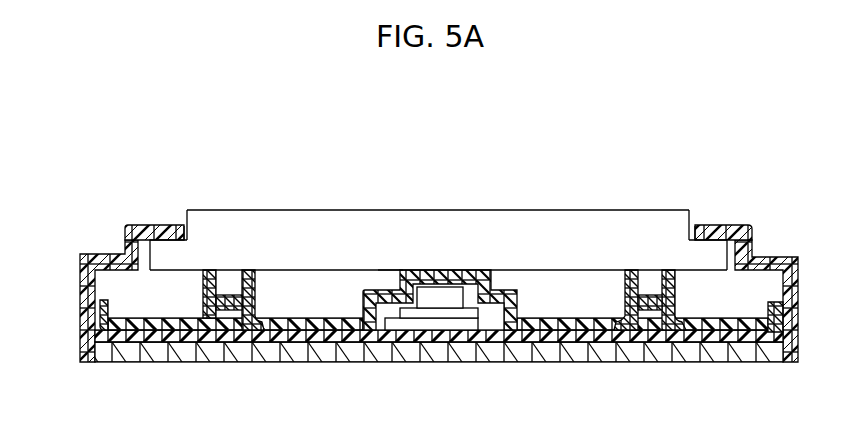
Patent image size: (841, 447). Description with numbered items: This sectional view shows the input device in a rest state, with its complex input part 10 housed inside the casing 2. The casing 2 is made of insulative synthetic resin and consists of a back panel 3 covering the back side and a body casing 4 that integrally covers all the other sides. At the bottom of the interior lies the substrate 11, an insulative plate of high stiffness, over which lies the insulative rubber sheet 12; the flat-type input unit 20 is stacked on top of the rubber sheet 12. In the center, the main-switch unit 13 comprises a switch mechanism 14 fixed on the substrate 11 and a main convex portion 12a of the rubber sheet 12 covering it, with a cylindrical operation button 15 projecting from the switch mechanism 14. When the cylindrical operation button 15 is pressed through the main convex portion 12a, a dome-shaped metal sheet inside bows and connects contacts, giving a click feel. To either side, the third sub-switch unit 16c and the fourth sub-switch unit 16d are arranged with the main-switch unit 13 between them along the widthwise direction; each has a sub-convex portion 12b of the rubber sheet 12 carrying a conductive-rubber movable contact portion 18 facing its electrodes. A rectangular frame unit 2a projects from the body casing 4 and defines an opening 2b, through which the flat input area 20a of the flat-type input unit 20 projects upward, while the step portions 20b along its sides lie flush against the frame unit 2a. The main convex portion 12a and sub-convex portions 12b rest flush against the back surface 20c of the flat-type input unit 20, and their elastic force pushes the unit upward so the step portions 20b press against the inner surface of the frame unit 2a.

The casing 2 is at (412, 299).
The frame unit 2a is at (134, 225).
The opening 2b is at (186, 222).
The back panel 3 is at (360, 353).
The body casing 4 is at (80, 276).
The complex input part 10 is at (578, 128).
The substrate 11 is at (713, 338).
The rubber sheet 12 is at (758, 343).
The main convex portion 12a is at (390, 269).
The sub-convex portion 12b is at (208, 287).
The main-switch unit 13 is at (514, 287).
The switch mechanism 14 is at (467, 318).
The cylindrical operation button 15 is at (426, 302).
The third sub-switch unit 16c is at (603, 293).
The fourth sub-switch unit 16d is at (186, 293).
The movable contact portion 18 is at (236, 316).
The flat-type input unit 20 is at (441, 207).
The input area 20a is at (326, 221).
The step portion 20b is at (164, 236).
The back surface 20c is at (274, 269).